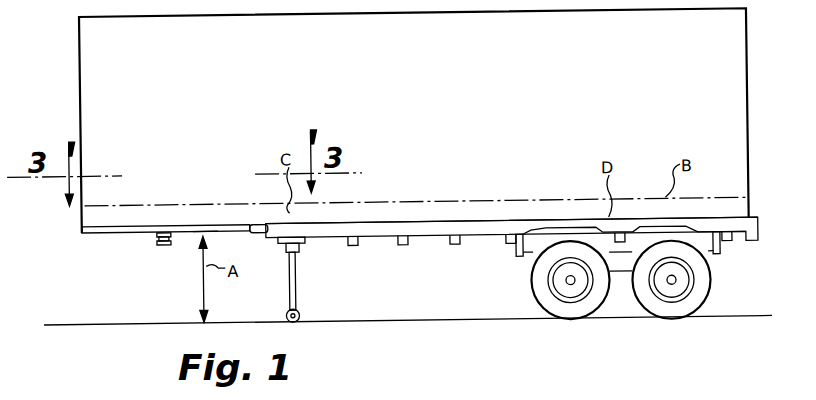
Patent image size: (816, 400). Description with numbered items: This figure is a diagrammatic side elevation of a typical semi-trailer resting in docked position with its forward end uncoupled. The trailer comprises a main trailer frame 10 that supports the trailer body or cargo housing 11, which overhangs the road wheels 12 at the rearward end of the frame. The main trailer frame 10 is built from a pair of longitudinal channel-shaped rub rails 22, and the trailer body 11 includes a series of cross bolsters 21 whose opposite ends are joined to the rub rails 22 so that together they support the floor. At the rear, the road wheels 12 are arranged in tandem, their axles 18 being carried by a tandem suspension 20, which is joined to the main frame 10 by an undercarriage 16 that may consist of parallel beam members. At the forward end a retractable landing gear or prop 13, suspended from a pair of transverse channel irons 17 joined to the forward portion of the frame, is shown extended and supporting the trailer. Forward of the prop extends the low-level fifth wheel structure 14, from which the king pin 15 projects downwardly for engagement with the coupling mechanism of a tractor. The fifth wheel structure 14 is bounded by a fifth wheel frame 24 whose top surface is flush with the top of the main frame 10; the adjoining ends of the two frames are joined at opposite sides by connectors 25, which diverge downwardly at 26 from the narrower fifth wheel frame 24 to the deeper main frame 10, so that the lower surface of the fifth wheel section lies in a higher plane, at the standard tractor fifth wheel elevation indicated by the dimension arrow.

The main trailer frame 10 is at (445, 230).
The trailer body 11 is at (96, 40).
The road wheels 12 is at (550, 311).
The landing gear 13 is at (294, 304).
The fifth wheel structure 14 is at (128, 236).
The king pin 15 is at (160, 248).
The undercarriage 16 is at (533, 252).
The transverse channel irons 17 is at (272, 244).
The axles 18 is at (562, 287).
The tandem suspension 20 is at (617, 280).
The cross bolsters 21 is at (364, 246).
The rub rails 22 is at (410, 231).
The fifth wheel frame 24 is at (116, 231).
The connectors 25 is at (252, 228).
The downwardly diverging portion 26 is at (203, 240).